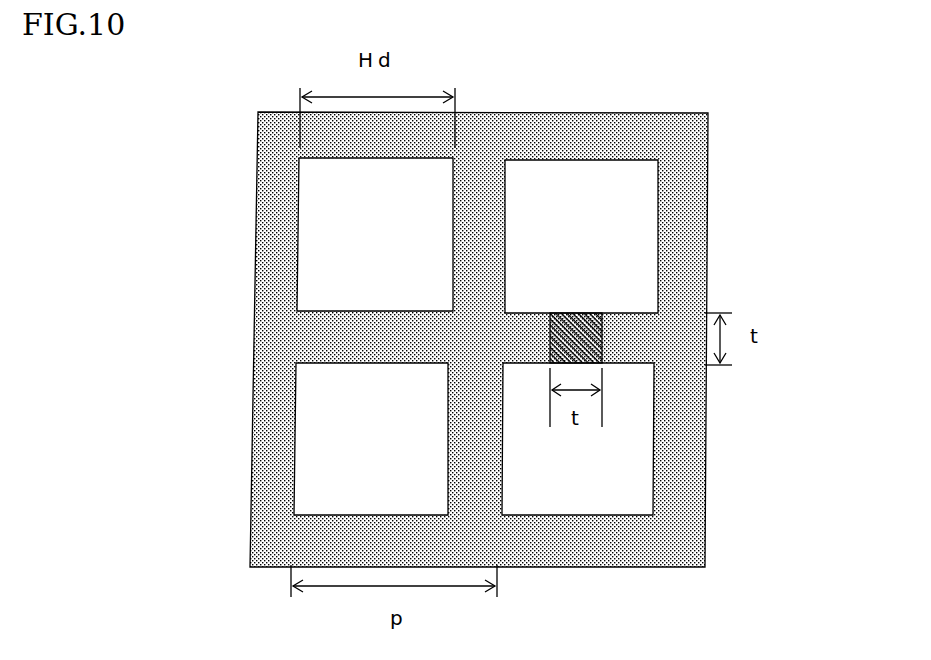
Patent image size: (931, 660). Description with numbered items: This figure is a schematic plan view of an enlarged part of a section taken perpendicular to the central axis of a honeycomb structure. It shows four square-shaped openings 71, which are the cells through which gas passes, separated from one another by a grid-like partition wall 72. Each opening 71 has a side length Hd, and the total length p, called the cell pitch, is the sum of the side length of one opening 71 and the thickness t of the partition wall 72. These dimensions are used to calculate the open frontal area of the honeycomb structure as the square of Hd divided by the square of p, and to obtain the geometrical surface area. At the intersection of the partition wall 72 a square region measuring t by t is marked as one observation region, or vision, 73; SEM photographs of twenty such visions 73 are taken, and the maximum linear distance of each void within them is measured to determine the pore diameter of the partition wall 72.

The opening 71 is at (607, 237).
The partition wall 72 is at (375, 330).
The observation region (vision) 73 is at (603, 338).